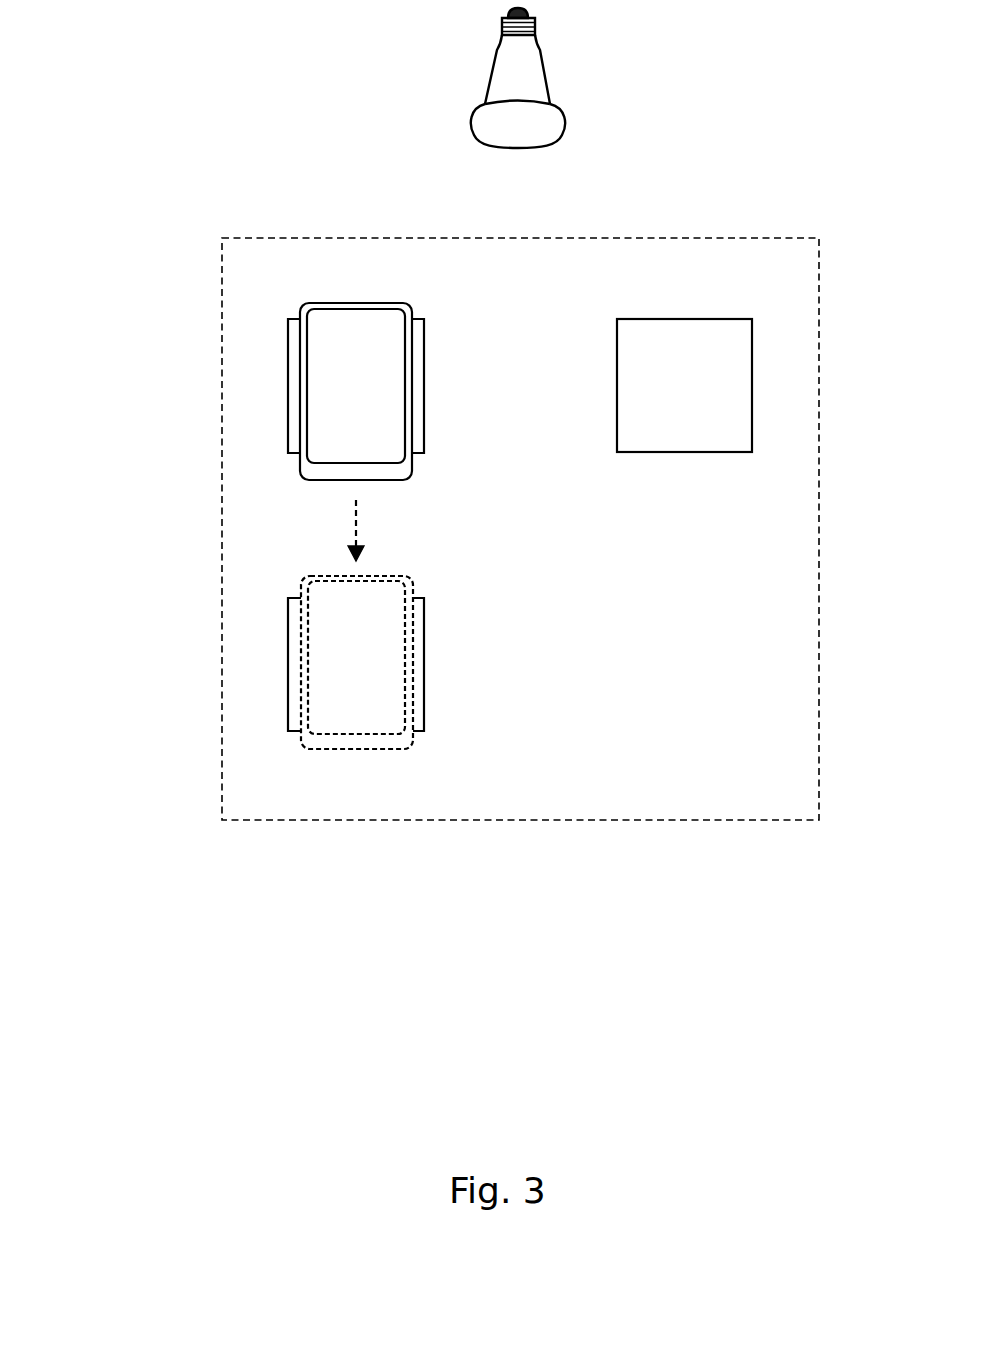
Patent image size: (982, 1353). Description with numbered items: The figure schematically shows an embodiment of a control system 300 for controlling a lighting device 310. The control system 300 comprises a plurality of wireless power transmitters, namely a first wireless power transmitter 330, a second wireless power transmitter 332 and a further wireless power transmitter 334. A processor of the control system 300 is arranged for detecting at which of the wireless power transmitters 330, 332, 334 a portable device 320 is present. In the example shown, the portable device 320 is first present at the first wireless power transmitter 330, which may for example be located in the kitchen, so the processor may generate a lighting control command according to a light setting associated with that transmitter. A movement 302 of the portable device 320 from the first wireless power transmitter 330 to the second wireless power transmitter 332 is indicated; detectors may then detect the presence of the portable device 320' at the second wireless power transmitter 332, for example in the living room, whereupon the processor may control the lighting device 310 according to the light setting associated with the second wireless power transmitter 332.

The control system 300 is at (166, 189).
The lighting device 310 is at (528, 65).
The portable device 320 is at (421, 391).
The first wireless power transmitter 330 is at (288, 405).
The wireless power transmitter 334 is at (637, 360).
The movement of device 302 is at (360, 523).
The portable device 320' is at (424, 662).
The second wireless power transmitter 332 is at (288, 683).